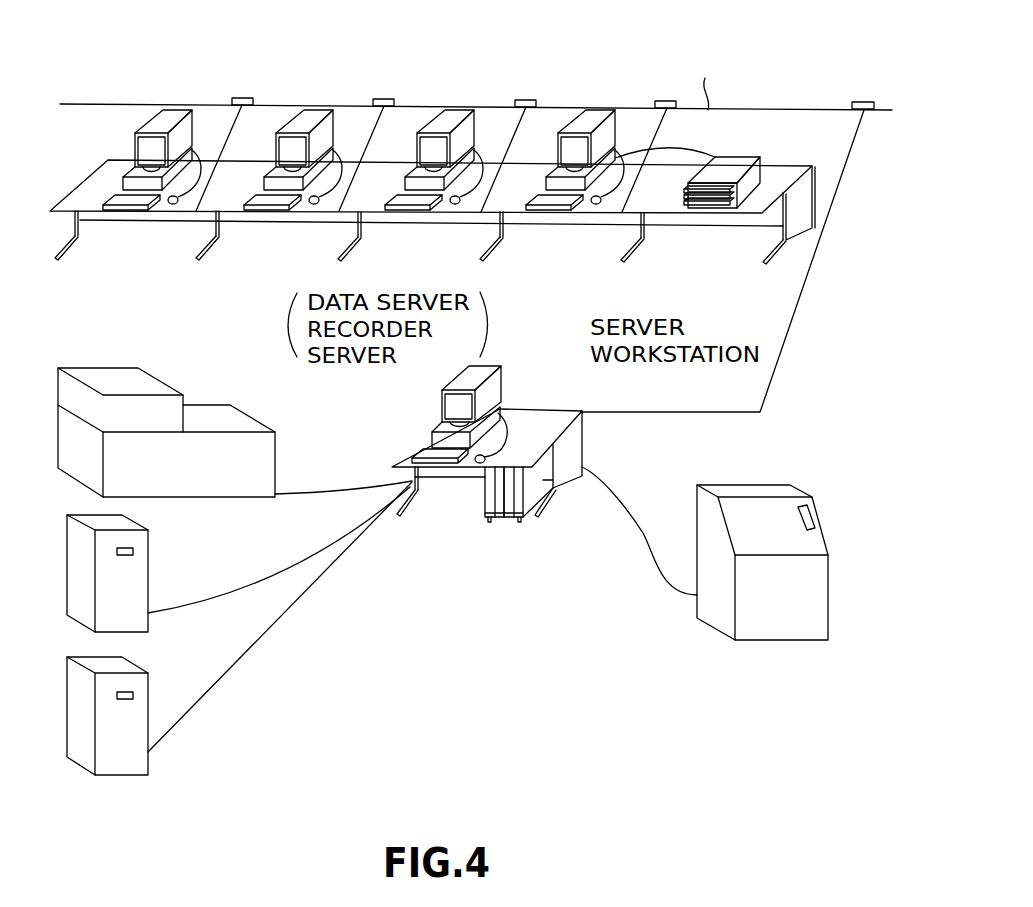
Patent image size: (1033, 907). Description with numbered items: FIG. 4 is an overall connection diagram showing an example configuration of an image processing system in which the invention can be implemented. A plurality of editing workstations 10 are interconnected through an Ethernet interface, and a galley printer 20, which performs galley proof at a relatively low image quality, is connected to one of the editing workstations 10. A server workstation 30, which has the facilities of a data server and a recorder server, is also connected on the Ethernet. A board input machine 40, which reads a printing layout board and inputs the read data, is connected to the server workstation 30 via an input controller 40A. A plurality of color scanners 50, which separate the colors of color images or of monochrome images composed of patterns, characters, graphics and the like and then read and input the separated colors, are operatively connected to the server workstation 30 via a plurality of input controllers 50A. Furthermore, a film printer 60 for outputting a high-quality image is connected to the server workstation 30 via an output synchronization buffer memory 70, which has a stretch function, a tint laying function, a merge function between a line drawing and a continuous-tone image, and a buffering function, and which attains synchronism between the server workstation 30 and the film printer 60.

The editing workstation 10 is at (135, 112).
The galley printer 20 is at (737, 198).
The server workstation 30 is at (512, 376).
The board input machine 40 is at (88, 369).
The color scanner 50 is at (65, 553).
The film printer 60 is at (827, 540).
The output synchronization buffer memory 70 is at (582, 443).
The input controller 40A is at (487, 528).
The input controller 50A is at (514, 528).